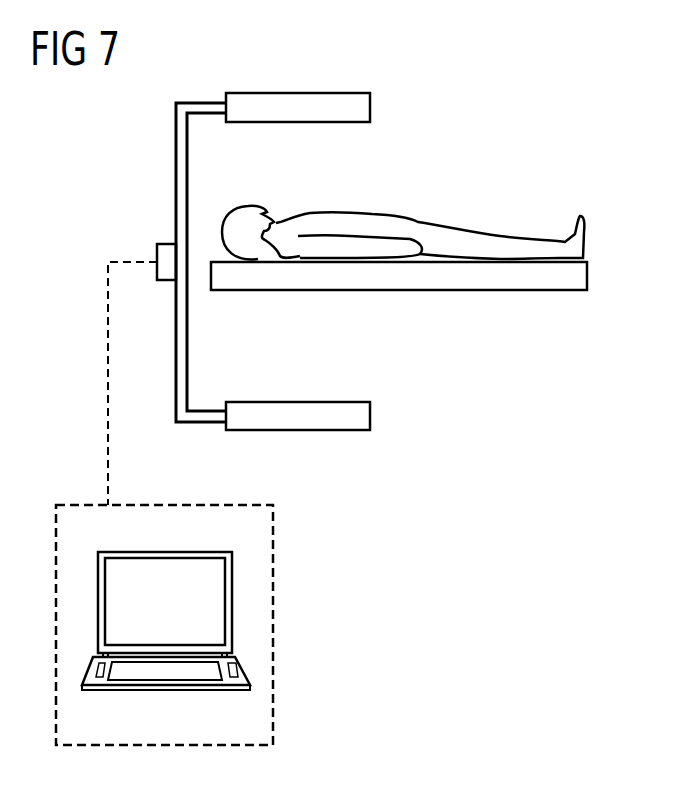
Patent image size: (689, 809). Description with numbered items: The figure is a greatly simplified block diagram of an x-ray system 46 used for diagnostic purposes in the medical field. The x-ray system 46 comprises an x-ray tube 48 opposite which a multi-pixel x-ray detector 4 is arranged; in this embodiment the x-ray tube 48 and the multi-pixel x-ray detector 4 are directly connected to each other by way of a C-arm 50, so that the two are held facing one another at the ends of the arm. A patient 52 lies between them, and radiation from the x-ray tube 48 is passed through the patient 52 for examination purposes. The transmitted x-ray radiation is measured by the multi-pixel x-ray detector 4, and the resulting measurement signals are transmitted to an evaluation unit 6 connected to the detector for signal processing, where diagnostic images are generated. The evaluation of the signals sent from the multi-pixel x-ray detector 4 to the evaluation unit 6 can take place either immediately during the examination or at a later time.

The multi-pixel x-ray detector 4 is at (370, 417).
The evaluation unit 6 is at (273, 600).
The x-ray system 46 is at (508, 118).
The x-ray tube 48 is at (370, 105).
The C-arm 50 is at (189, 350).
The patient 52 is at (330, 213).